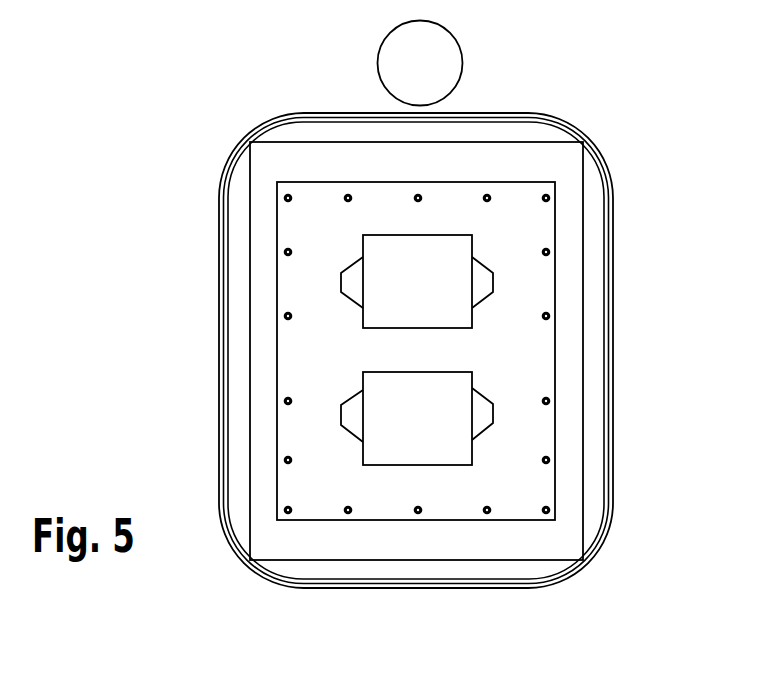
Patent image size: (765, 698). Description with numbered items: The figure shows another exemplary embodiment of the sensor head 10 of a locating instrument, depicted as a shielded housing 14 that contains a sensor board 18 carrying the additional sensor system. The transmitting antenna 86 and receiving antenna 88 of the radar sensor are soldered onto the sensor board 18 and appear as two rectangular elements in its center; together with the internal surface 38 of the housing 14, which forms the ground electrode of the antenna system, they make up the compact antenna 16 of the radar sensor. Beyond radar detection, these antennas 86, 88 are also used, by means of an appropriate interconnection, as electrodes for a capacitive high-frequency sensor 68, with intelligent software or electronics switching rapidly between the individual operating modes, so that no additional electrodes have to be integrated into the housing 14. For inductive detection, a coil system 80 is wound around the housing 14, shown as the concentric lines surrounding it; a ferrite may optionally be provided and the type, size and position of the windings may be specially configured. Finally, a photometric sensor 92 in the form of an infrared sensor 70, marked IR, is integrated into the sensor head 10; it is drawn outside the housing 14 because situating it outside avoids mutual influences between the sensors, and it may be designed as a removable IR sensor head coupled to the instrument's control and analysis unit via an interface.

The sensor head 10 is at (434, 359).
The housing 14 is at (462, 415).
The internal surface 38 is at (535, 162).
The sensor board 18 is at (535, 228).
The transmitting antenna 86 is at (550, 281).
The antenna 16 is at (458, 282).
The receiving antenna 88 is at (550, 418).
The capacitive high-frequency sensor 68 is at (458, 412).
The infrared sensor 70 is at (503, 63).
The photometric sensor 92 is at (443, 57).
The coil system 80 is at (613, 498).